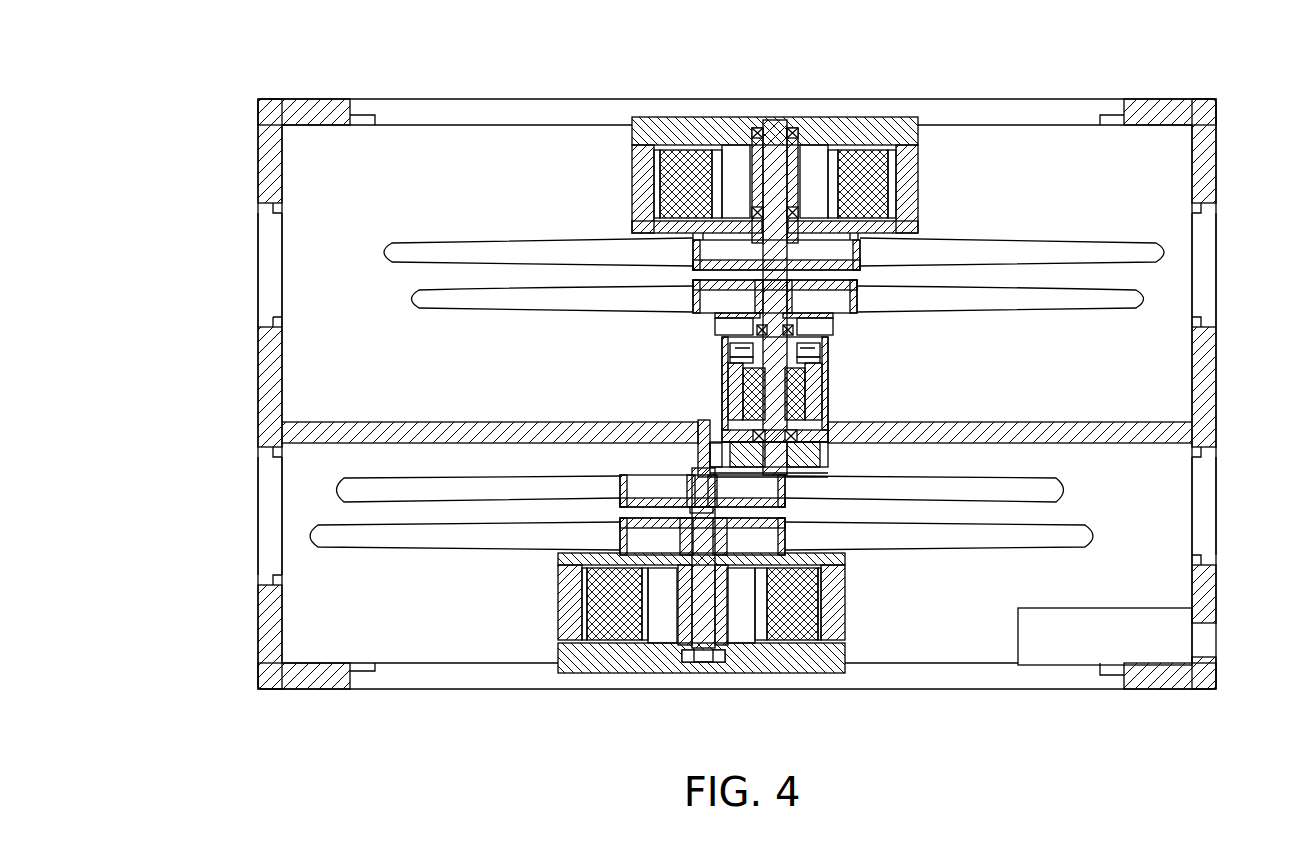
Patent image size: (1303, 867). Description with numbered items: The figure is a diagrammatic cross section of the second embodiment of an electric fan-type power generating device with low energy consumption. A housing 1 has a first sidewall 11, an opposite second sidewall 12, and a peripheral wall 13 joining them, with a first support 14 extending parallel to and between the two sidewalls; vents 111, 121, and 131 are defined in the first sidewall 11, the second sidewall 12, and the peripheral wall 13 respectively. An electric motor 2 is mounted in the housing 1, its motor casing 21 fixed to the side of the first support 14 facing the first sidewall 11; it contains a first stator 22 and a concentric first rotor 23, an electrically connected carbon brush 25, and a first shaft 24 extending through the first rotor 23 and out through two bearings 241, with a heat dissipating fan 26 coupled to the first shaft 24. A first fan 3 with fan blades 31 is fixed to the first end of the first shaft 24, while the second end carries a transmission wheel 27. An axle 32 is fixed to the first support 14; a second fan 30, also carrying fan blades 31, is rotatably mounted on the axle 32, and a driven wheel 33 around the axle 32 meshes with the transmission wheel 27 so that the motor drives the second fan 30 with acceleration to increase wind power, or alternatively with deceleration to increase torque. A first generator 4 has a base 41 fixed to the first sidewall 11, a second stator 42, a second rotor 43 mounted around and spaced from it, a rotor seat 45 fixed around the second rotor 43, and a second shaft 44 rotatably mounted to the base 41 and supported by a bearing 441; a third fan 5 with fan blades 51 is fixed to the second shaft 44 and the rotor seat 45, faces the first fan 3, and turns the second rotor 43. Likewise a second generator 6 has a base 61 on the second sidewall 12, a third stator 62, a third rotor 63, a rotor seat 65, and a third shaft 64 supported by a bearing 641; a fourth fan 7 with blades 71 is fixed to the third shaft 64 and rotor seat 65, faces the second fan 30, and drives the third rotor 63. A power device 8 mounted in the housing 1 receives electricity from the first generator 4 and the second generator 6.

The housing 1 is at (737, 386).
The first sidewall 11 is at (737, 226).
The vent 111 is at (528, 112).
The second sidewall 12 is at (737, 600).
The vent 121 is at (440, 680).
The peripheral wall 13 is at (278, 152).
The vent 131 is at (270, 266).
The first support 14 is at (578, 428).
The electric motor 2 is at (767, 395).
The motor casing 21 is at (730, 379).
The first stator 22 is at (822, 380).
The first rotor 23 is at (736, 405).
The first shaft 24 is at (740, 352).
The bearings 241 is at (822, 402).
The carbon brush 25 is at (812, 352).
The heat dissipating fan 26 is at (792, 324).
The transmission wheel 27 is at (802, 452).
The first fan 3 is at (498, 296).
The second fan 30 is at (977, 490).
The fan blades 31 is at (1040, 302).
The axle 32 is at (700, 424).
The driven wheel 33 is at (708, 460).
The first generator 4 is at (781, 253).
The base 41 is at (832, 142).
The second stator 42 is at (876, 150).
The second rotor 43 is at (916, 186).
The second shaft 44 is at (776, 128).
The bearing 441 is at (757, 128).
The rotor seat 45 is at (916, 158).
The third fan 5 is at (774, 219).
The fan blades 51 is at (513, 242).
The second generator 6 is at (686, 612).
The base 61 is at (794, 658).
The third stator 62 is at (618, 652).
The third rotor 63 is at (580, 606).
The third shaft 64 is at (701, 652).
The bearing 641 is at (720, 664).
The rotor seat 65 is at (568, 569).
The fourth fan 7 is at (701, 567).
The blades 71 is at (930, 538).
The power device 8 is at (1060, 648).